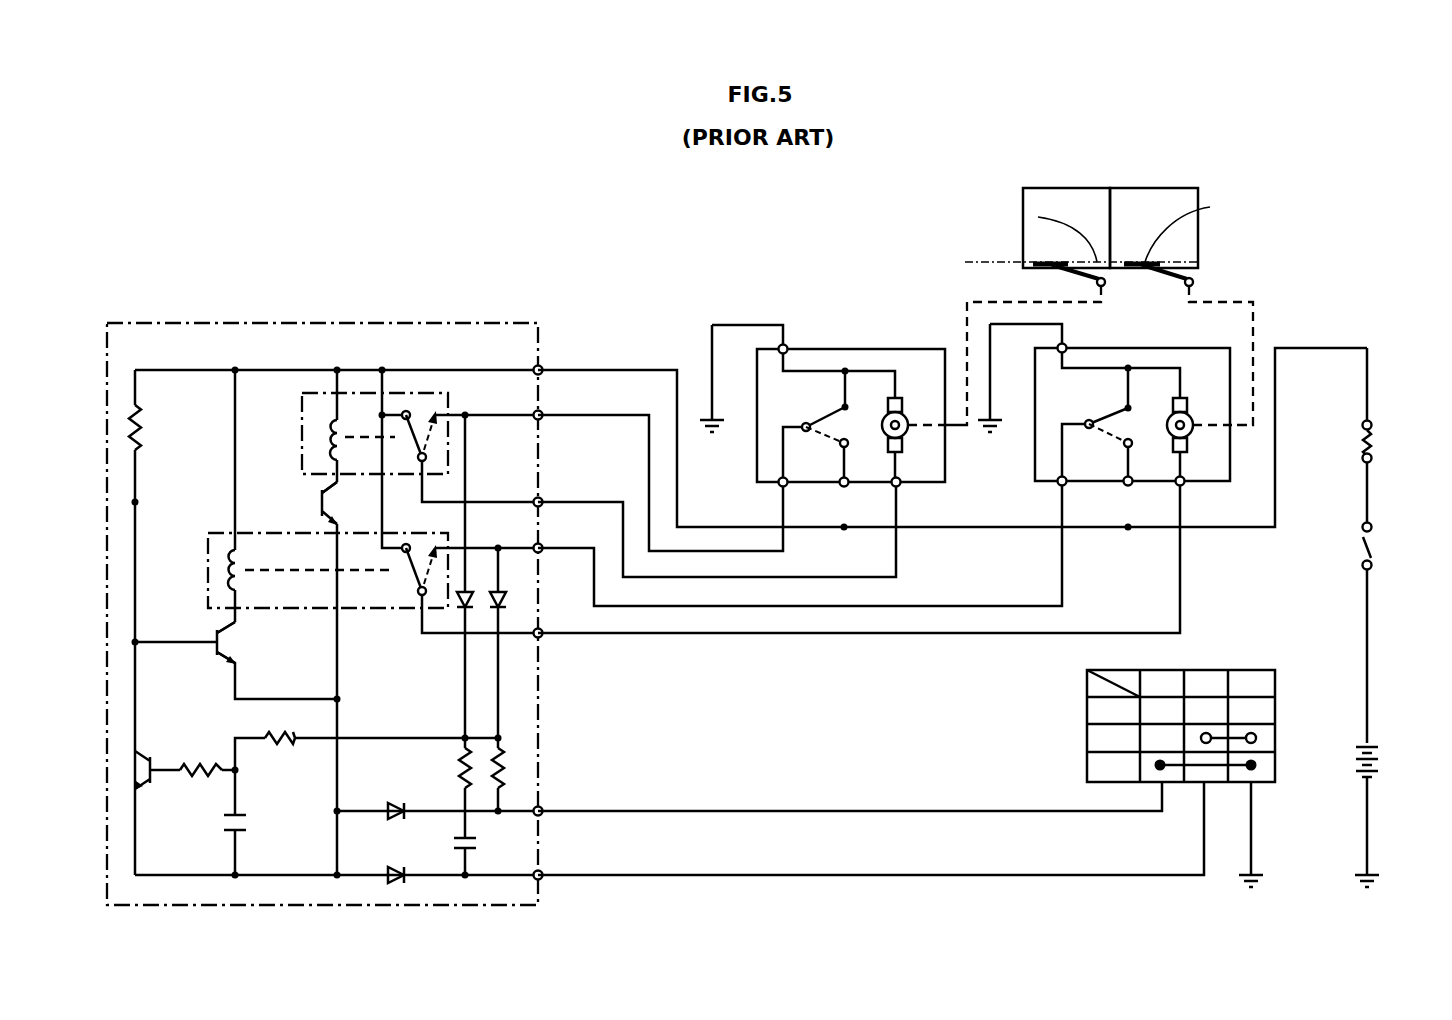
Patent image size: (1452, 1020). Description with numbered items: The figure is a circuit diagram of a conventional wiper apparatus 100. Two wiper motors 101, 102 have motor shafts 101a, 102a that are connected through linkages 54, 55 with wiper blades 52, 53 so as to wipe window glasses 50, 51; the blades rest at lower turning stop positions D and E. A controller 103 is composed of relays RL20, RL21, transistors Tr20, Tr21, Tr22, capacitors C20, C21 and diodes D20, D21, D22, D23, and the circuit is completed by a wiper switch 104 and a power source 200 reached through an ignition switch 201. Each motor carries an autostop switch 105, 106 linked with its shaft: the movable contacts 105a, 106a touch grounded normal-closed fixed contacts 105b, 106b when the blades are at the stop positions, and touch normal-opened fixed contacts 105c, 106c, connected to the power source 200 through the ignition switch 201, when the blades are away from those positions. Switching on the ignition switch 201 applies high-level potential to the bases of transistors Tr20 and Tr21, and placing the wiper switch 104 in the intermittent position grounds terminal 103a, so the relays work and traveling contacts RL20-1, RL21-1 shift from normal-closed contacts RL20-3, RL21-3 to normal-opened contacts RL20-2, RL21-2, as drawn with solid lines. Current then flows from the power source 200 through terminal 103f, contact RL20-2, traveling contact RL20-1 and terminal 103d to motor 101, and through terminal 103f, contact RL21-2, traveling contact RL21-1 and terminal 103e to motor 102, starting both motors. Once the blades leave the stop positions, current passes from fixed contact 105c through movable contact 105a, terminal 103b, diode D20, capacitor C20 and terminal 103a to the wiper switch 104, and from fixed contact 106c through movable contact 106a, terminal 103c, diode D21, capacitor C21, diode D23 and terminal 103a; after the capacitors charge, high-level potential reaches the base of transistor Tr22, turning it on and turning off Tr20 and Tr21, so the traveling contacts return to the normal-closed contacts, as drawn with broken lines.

The wiper apparatus 100 is at (645, 293).
The controller 103 is at (270, 323).
The terminal 103a is at (543, 876).
The terminal 103b is at (542, 413).
The terminal 103c is at (542, 546).
The terminal 103d is at (542, 500).
The terminal 103e is at (543, 637).
The terminal 103f is at (542, 367).
The relay RL20 is at (372, 393).
The traveling contact RL20-1 is at (418, 440).
The normal-opened contact RL20-2 is at (406, 410).
The normal-closed contact RL20-3 is at (438, 415).
The relay RL21 is at (208, 595).
The traveling contact RL21-1 is at (410, 546).
The normal-opened contact RL21-2 is at (408, 560).
The normal-closed contact RL21-3 is at (440, 545).
The transistor Tr20 is at (352, 503).
The transistor Tr21 is at (253, 643).
The transistor Tr22 is at (169, 761).
The diode D20 is at (457, 605).
The diode D21 is at (492, 606).
The diode D22 is at (395, 798).
The diode D23 is at (395, 860).
The capacitor C20 is at (487, 841).
The capacitor C21 is at (256, 822).
The wiper motor 101 is at (834, 388).
The motor shaft 101a is at (905, 432).
The autostop switch 105 is at (807, 392).
The movable contact 105a is at (808, 420).
The normal-closed fixed contact 105b is at (846, 400).
The normal-opened fixed contact 105c is at (841, 450).
The wiper motor 102 is at (1109, 401).
The motor shaft 102a is at (1191, 434).
The autostop switch 106 is at (1106, 395).
The movable contact 106a is at (1112, 436).
The normal-closed fixed contact 106b is at (1130, 400).
The normal-opened fixed contact 106c is at (1125, 450).
The wiper switch 104 is at (1249, 669).
The power source 200 is at (1364, 746).
The ignition switch 201 is at (1371, 552).
The window glass 50 is at (1075, 196).
The window glass 51 is at (1128, 196).
The wiper blade 52 is at (1043, 254).
The wiper blade 53 is at (1210, 207).
The linkage 54 is at (966, 302).
The linkage 55 is at (1235, 300).
The stop position D is at (978, 262).
The stop position E is at (1038, 217).